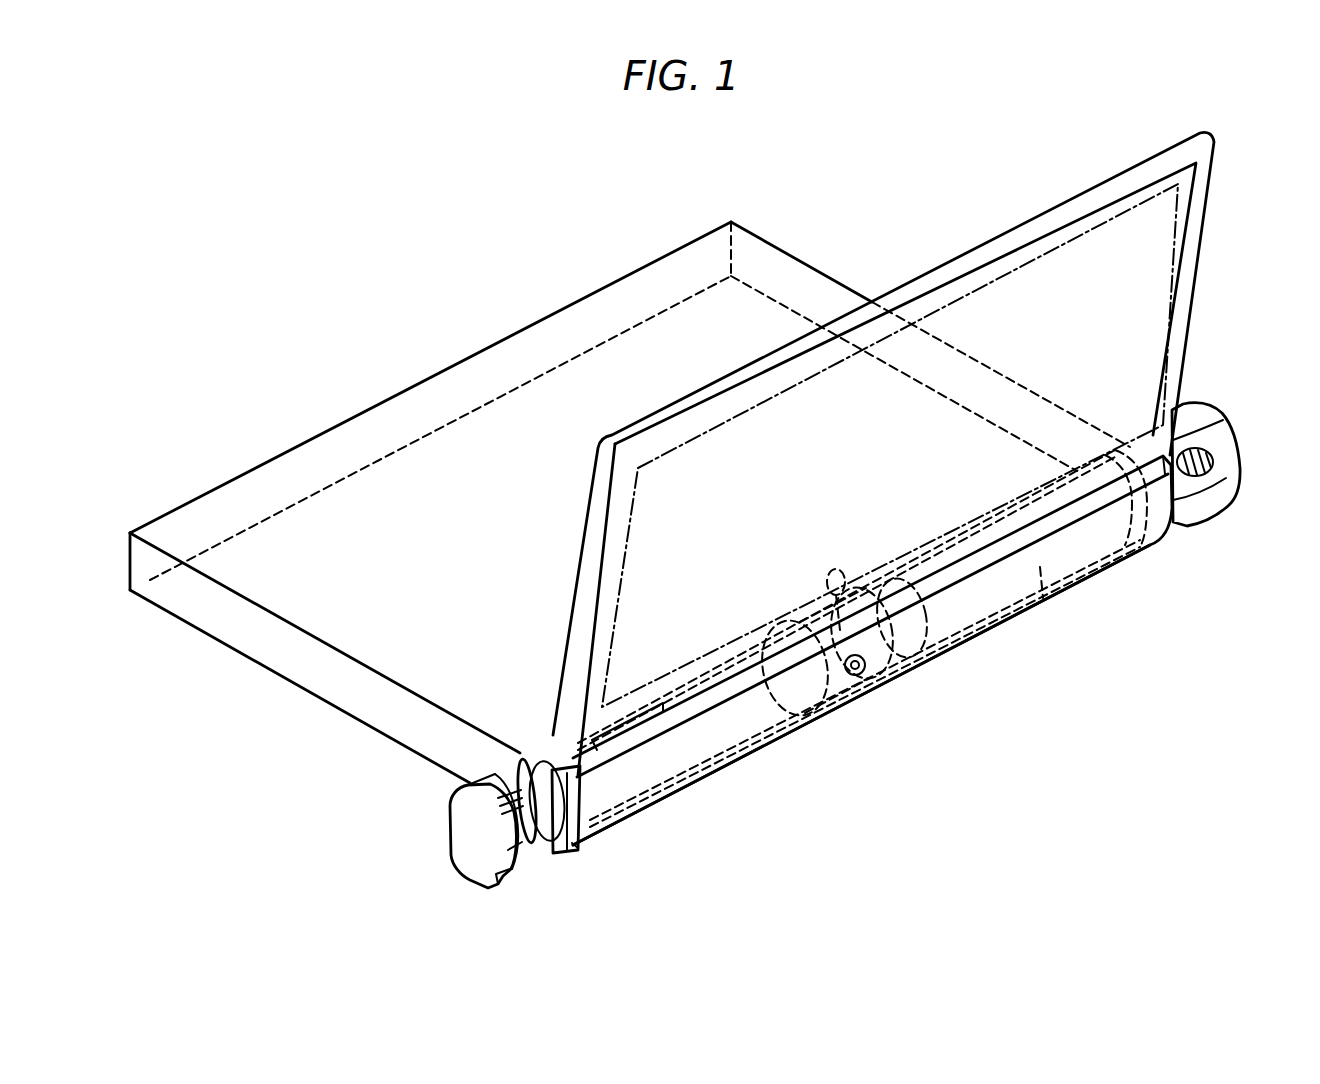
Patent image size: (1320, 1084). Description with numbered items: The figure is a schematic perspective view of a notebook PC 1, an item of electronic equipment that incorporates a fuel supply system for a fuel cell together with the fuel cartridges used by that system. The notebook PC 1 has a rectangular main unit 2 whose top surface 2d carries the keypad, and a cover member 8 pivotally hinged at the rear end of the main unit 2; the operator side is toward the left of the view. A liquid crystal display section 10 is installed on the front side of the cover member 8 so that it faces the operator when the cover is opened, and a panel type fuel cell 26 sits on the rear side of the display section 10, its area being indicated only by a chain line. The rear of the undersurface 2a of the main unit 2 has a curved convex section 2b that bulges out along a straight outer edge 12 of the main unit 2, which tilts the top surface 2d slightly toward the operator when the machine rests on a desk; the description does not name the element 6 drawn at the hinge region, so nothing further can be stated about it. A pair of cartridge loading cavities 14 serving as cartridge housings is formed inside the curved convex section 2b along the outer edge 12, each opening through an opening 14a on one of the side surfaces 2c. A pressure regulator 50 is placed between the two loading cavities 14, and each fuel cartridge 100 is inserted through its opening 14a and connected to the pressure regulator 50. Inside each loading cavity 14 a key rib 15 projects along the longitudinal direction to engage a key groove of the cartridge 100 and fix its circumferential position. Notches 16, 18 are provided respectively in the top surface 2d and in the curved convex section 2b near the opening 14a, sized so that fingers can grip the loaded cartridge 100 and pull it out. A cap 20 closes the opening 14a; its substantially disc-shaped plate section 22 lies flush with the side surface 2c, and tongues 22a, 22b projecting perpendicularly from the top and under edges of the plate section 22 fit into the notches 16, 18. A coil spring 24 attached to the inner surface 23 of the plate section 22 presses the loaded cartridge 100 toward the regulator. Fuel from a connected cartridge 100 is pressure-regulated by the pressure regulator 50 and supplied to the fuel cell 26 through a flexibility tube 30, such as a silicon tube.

The notebook PC 1 is at (365, 280).
The main unit 2 is at (630, 498).
The undersurface 2a is at (390, 723).
The curved convex section 2b is at (753, 753).
The side surface 2c is at (793, 270).
The top surface 2d is at (365, 517).
The hinge housing 6 is at (835, 655).
The cover member 8 is at (1081, 255).
The display section 10 is at (871, 453).
The outer edge 12 is at (605, 830).
The cartridge loading cavity 14 is at (703, 778).
The opening 14a is at (572, 843).
The key rib 15 is at (775, 690).
The notch 16 is at (550, 745).
The notch 18 is at (557, 856).
The cap 20 is at (466, 837).
The plate section 22 is at (455, 813).
The tongue 22a is at (500, 785).
The tongue 22b is at (503, 884).
The inner surface 23 is at (1222, 500).
The coil spring 24 is at (1226, 452).
The fuel cell 26 is at (1014, 270).
The flexibility tube 30 is at (830, 572).
The pressure regulator 50 is at (858, 682).
The fuel cartridge 100 is at (1048, 570).